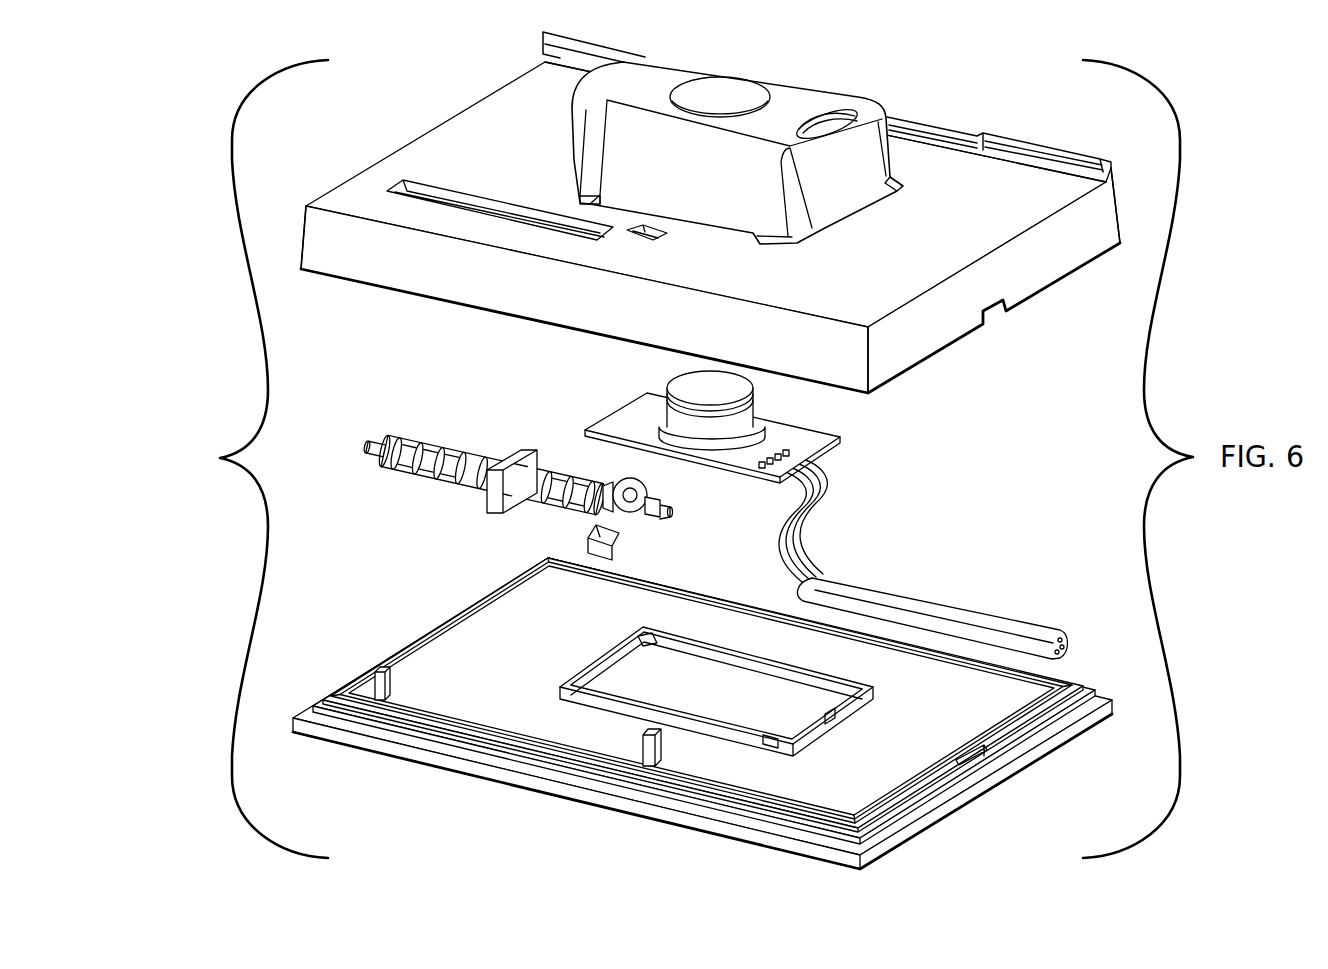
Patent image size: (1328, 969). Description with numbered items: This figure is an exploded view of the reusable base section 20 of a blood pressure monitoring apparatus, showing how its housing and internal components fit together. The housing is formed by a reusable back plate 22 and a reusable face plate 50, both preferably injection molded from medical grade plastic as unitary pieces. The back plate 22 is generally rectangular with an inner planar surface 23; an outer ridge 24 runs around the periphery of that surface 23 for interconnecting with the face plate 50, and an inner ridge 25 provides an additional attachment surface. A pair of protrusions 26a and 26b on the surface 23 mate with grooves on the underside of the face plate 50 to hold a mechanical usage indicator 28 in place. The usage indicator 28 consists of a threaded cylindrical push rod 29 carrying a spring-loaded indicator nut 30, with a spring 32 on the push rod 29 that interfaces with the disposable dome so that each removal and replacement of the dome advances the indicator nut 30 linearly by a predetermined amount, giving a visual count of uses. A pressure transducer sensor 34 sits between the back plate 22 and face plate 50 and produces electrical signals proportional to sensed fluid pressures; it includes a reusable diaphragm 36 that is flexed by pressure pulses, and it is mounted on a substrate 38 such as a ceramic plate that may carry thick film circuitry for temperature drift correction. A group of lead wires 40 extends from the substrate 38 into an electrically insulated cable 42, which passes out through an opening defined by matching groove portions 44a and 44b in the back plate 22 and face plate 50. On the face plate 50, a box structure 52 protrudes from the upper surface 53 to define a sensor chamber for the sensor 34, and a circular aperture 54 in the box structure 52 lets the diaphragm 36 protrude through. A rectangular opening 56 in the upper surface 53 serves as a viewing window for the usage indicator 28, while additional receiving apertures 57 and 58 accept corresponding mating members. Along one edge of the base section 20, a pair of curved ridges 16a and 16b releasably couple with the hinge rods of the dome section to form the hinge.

The reusable base section 20 is at (220, 458).
The reusable back plate 22 is at (702, 717).
The inner planar surface 23 is at (868, 787).
The outer ridge 24 is at (703, 695).
The inner ridge 25 is at (593, 667).
The protrusion 26a is at (392, 684).
The protrusion 26b is at (662, 750).
The mechanical usage indicator 28 is at (519, 466).
The threaded cylindrical push rod 29 is at (448, 487).
The indicator nut 30 is at (518, 460).
The spring 32 is at (619, 553).
The pressure transducer sensor 34 is at (734, 395).
The reusable diaphragm 36 is at (697, 388).
The substrate 38 is at (822, 431).
The lead wires 40 is at (798, 560).
The electrically insulated cable 42 is at (943, 615).
The groove portion 44a is at (966, 760).
The groove portion 44b is at (995, 312).
The reusable face plate 50 is at (710, 197).
The box structure 52 is at (737, 131).
The upper surface 53 is at (943, 187).
The circular aperture 54 is at (727, 97).
The rectangular opening 56 is at (455, 196).
The receiving aperture 57 is at (660, 236).
The receiving aperture 58 is at (597, 202).
The curved ridge 16a is at (617, 45).
The curved ridge 16b is at (1038, 147).